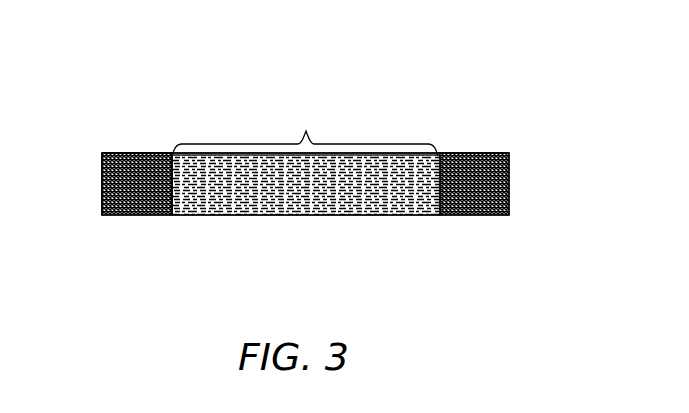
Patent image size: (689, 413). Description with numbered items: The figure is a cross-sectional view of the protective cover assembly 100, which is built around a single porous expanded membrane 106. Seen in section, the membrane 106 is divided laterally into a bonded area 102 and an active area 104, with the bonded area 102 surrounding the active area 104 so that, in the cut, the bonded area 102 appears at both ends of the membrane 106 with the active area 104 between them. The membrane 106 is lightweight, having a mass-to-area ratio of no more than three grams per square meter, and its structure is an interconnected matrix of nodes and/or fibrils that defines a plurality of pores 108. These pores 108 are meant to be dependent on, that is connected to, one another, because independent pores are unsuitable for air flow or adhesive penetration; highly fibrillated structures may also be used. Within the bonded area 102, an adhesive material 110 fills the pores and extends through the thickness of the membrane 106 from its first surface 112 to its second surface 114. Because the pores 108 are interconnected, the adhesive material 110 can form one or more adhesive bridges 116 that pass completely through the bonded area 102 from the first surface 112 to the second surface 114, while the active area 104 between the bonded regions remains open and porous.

The protective cover assembly 100 is at (442, 126).
The bonded area 102 is at (149, 125).
The active area 104 is at (305, 128).
The porous expanded membrane 106 is at (365, 219).
The pores 108 is at (220, 207).
The adhesive material 110 is at (134, 219).
The first surface 112 is at (102, 153).
The second surface 114 is at (172, 215).
The adhesive bridges 116 is at (100, 188).